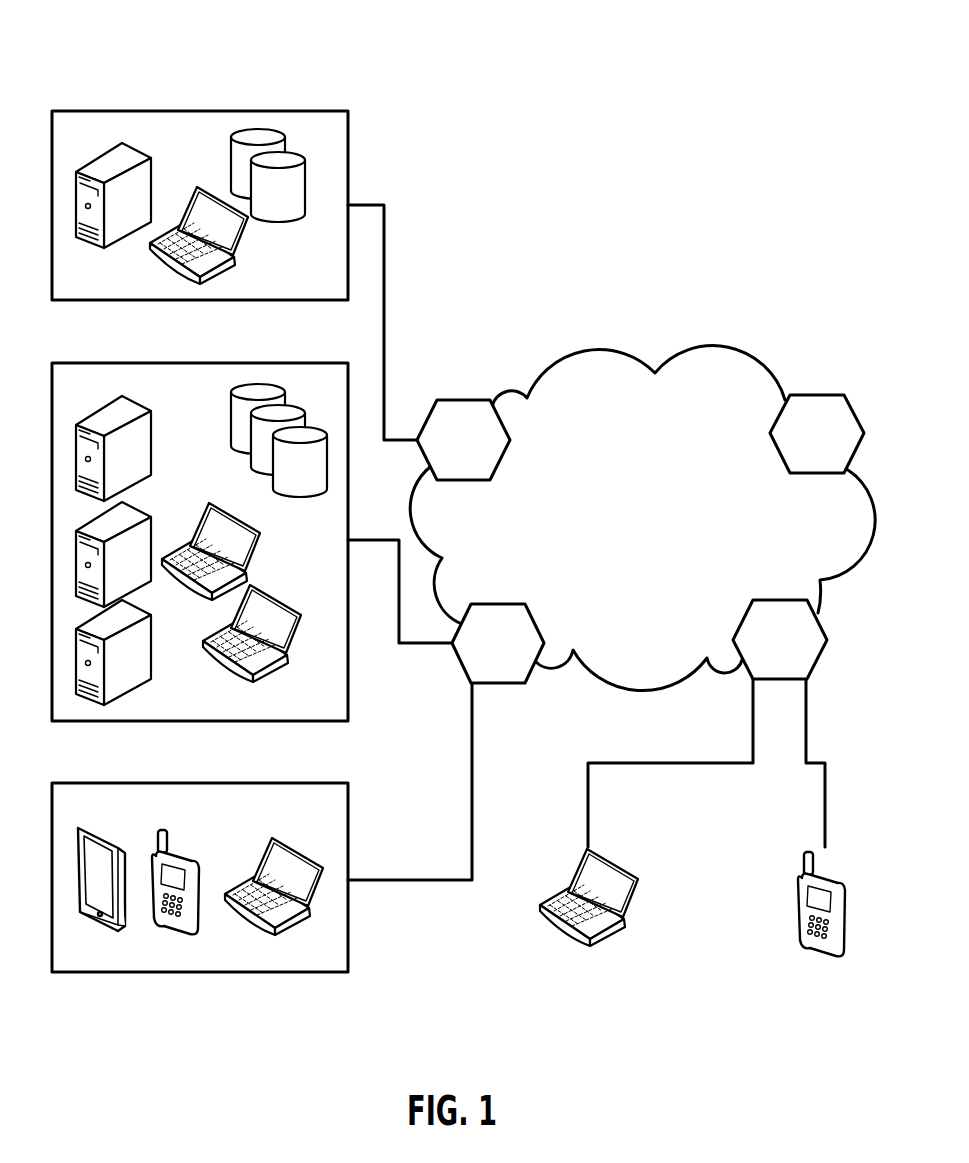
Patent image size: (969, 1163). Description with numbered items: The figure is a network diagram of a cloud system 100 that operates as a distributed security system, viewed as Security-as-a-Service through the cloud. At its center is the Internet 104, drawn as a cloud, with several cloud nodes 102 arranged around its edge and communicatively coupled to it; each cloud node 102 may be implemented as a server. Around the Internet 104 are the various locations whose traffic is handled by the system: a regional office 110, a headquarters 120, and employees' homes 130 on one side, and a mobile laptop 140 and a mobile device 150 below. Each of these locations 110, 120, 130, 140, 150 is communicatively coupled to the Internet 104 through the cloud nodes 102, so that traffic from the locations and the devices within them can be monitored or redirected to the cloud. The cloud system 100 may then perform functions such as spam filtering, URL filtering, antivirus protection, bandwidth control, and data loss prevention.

The cloud system 100 is at (776, 58).
The cloud node 102 is at (651, 514).
The Internet 104 is at (760, 363).
The regional office 110 is at (267, 111).
The headquarters 120 is at (267, 363).
The employee's home 130 is at (275, 783).
The mobile laptop 140 is at (637, 877).
The mobile device 150 is at (797, 897).